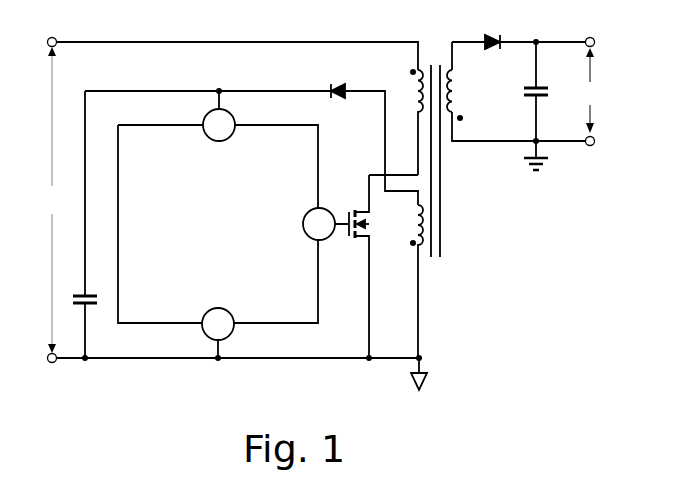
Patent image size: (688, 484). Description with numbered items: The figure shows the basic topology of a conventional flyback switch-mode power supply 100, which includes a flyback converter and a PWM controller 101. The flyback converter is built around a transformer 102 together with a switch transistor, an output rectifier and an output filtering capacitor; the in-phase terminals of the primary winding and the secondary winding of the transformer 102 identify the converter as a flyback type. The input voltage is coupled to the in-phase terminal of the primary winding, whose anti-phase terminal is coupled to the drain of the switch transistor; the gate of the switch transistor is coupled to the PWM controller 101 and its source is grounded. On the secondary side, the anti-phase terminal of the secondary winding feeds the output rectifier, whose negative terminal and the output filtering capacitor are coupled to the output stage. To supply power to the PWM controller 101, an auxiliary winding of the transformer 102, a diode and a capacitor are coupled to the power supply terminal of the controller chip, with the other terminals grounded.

The flyback switch-mode power supply 100 is at (300, 23).
The PWM controller 101 is at (116, 124).
The transformer 102 is at (436, 56).